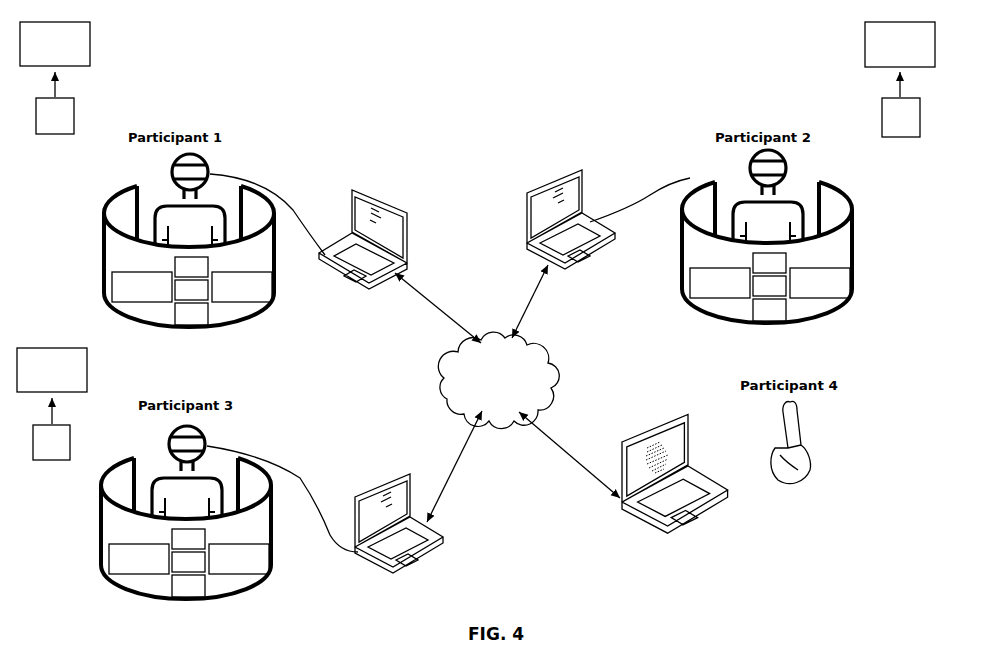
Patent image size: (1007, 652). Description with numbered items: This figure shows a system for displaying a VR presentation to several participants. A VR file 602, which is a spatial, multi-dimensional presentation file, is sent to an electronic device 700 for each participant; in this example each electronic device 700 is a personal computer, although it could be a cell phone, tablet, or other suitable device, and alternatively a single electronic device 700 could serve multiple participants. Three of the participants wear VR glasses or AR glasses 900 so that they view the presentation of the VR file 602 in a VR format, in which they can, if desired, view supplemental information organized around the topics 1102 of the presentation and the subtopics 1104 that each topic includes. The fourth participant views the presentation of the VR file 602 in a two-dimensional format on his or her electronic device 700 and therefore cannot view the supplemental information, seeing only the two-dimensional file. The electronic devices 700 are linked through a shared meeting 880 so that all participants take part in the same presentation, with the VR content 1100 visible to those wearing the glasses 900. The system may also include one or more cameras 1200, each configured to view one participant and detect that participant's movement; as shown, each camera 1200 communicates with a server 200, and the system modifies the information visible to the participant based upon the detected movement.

The server 200 is at (90, 35).
The camera 1200 is at (74, 113).
The VR file 602 is at (108, 262).
The VR glasses or augmented reality glasses 900 is at (211, 171).
The subtopics 1104 is at (127, 296).
The slide presentation content 1100 is at (235, 318).
The electronic device 700 is at (376, 197).
The meeting network cloud 880 is at (550, 385).
The topics 1102 is at (655, 440).